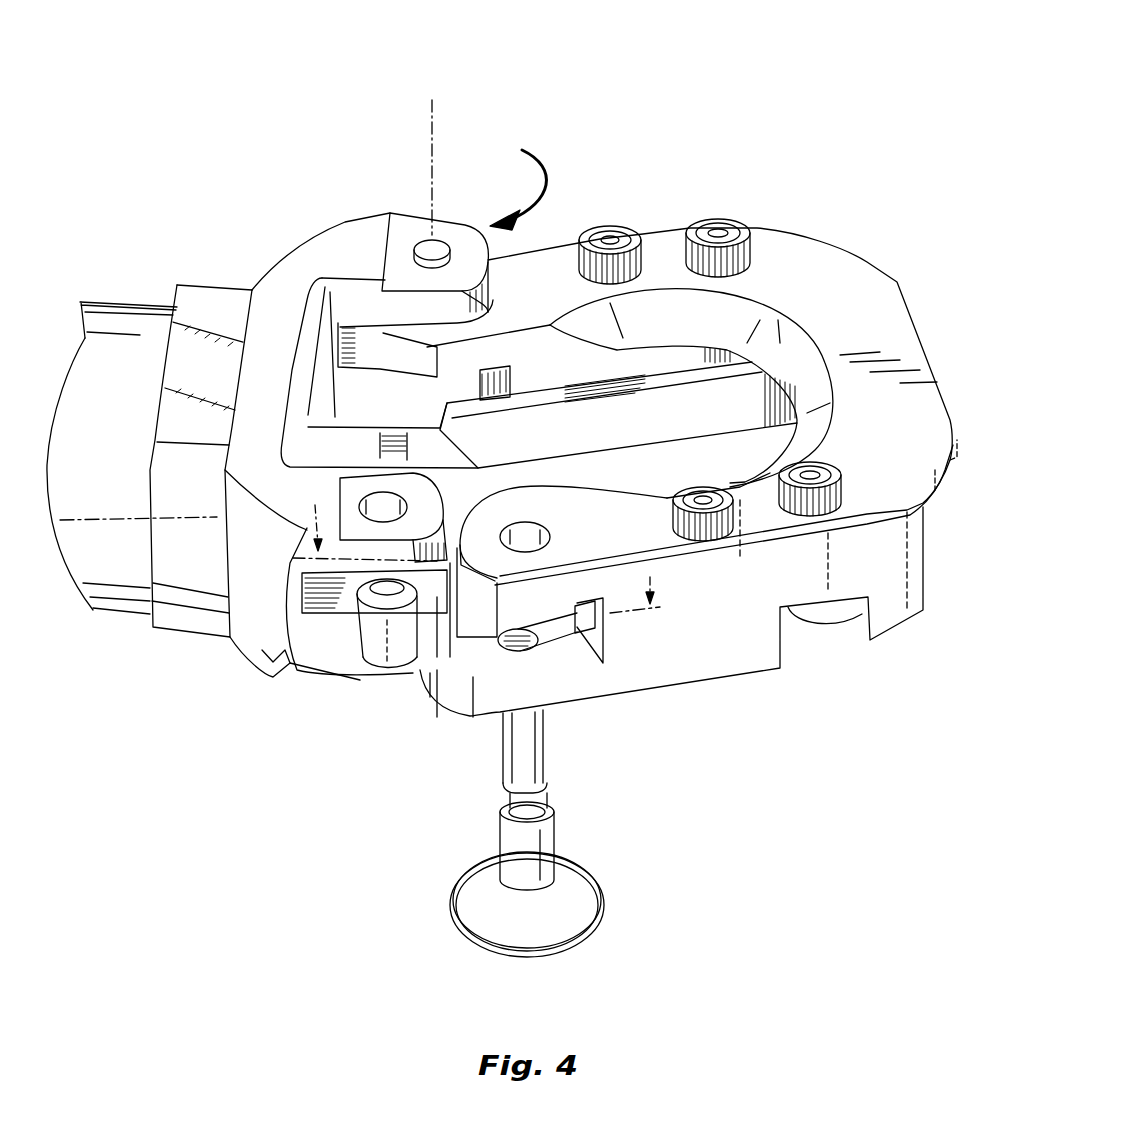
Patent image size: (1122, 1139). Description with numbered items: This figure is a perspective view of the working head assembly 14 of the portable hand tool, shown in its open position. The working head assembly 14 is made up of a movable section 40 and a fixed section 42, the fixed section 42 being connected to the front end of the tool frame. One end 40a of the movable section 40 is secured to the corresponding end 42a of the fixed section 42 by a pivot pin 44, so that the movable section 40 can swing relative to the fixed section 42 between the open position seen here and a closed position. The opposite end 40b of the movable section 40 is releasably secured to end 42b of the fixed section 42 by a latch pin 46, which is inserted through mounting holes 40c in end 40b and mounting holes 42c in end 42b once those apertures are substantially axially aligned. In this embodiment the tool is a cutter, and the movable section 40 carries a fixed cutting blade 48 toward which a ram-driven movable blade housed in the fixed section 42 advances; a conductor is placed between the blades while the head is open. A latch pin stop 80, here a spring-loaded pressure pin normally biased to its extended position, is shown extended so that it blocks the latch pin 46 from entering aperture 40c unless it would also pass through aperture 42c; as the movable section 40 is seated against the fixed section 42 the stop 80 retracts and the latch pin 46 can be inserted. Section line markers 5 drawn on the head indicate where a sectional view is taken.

The working head assembly 14 is at (750, 138).
The movable section 40 is at (856, 258).
The end of the movable section 40a is at (557, 262).
The end of the movable section 40b is at (698, 686).
The mounting holes 40c is at (526, 548).
The fixed section 42 is at (112, 622).
The end of the fixed section 42a is at (346, 232).
The end of the fixed section 42b is at (307, 663).
The mounting holes 42c is at (373, 670).
The pivot pin 44 is at (432, 240).
The latch pin 46 is at (500, 843).
The fixed cutting blade 48 is at (777, 343).
The latch pin stop 80 is at (566, 648).
The section line 5 is at (482, 547).